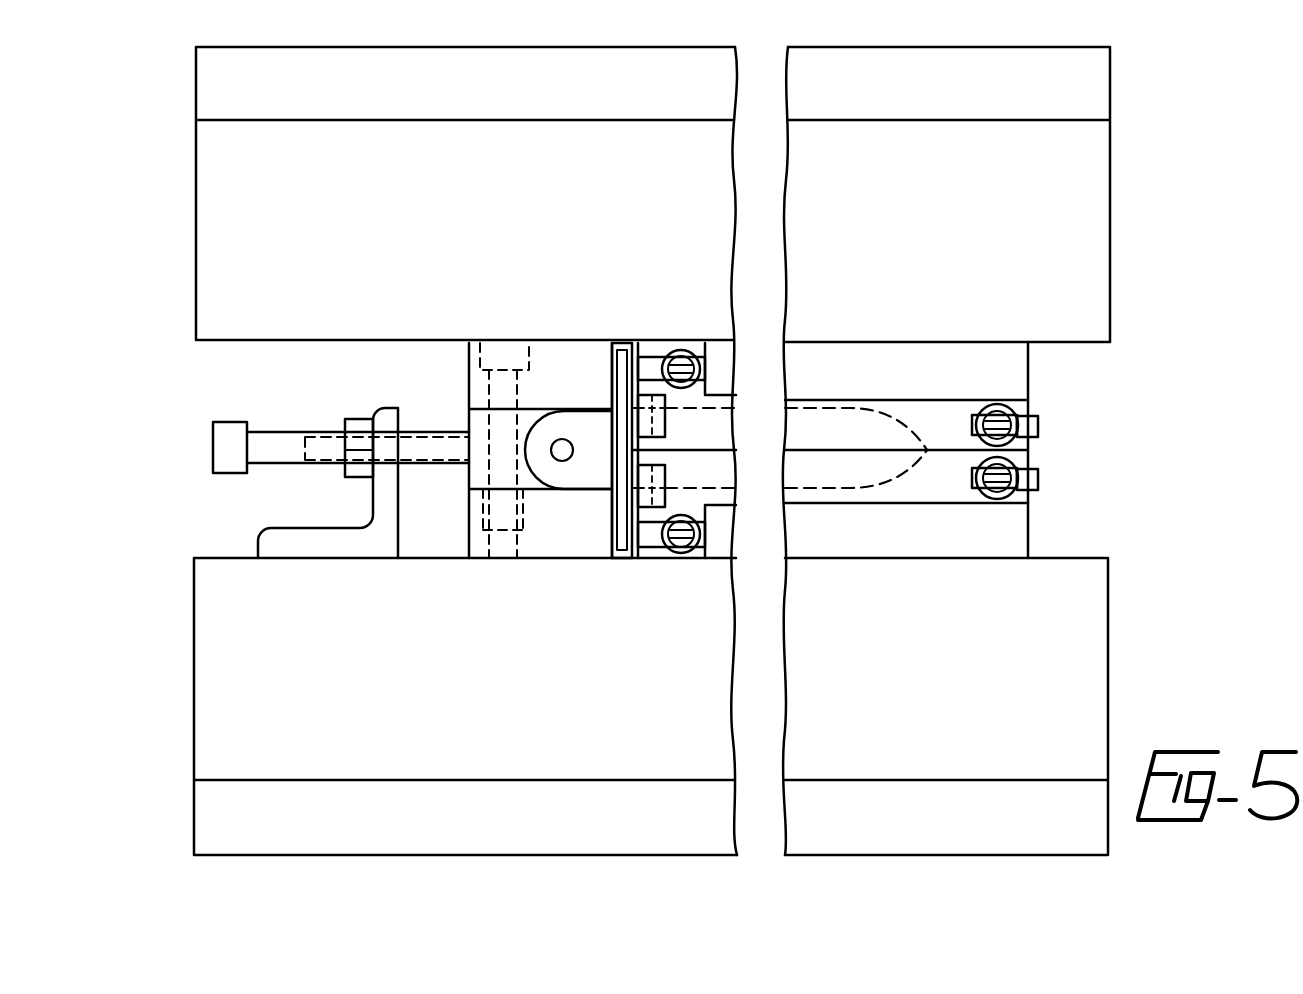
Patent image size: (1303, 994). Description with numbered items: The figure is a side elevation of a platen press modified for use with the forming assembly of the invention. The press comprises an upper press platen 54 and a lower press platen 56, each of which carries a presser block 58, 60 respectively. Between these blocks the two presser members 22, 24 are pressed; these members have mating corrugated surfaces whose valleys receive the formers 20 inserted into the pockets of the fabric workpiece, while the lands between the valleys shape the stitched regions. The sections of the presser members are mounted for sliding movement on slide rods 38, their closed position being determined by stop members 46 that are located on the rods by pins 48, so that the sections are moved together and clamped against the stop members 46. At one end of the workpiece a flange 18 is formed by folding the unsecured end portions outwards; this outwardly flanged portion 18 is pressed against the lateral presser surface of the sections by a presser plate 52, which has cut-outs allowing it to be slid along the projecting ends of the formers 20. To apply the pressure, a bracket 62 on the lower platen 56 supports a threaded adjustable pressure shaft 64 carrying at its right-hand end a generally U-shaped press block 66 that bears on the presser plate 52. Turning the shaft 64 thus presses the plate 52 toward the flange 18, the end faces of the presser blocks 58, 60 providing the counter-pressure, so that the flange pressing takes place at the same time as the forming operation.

The flange 18 is at (628, 426).
The former 20 is at (590, 463).
The presser member 22 is at (938, 418).
The presser member 24 is at (935, 480).
The slide rod 38 is at (674, 352).
The stop member 46 is at (690, 358).
The pin 48 is at (655, 357).
The presser plate 52 is at (622, 522).
The upper press platen 54 is at (228, 260).
The lower press platen 56 is at (213, 665).
The presser block 58 is at (836, 366).
The presser block 60 is at (830, 560).
The bracket 62 is at (283, 543).
The threaded adjustable pressure shaft 64 is at (276, 440).
The U-shaped press block 66 is at (470, 388).